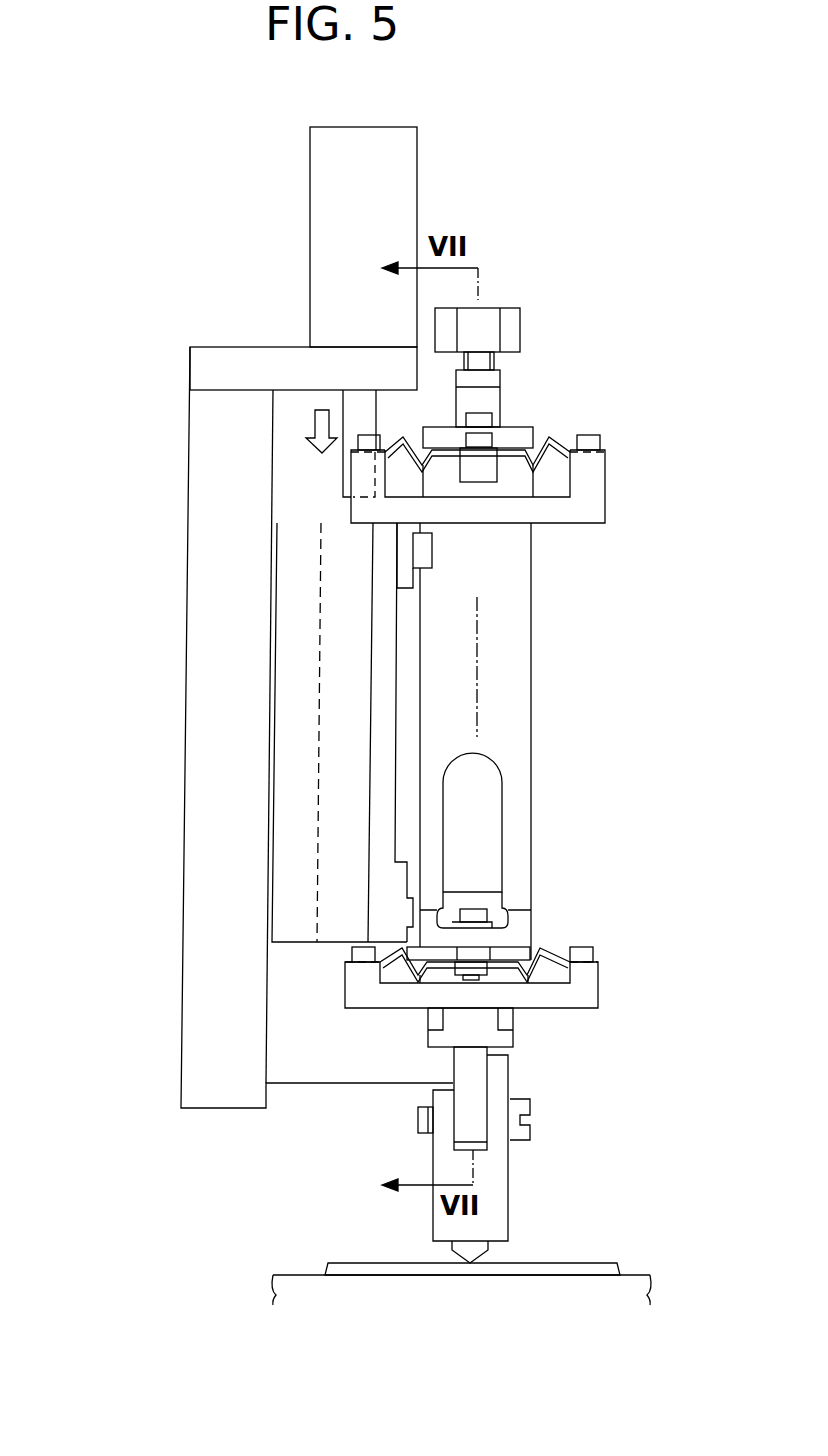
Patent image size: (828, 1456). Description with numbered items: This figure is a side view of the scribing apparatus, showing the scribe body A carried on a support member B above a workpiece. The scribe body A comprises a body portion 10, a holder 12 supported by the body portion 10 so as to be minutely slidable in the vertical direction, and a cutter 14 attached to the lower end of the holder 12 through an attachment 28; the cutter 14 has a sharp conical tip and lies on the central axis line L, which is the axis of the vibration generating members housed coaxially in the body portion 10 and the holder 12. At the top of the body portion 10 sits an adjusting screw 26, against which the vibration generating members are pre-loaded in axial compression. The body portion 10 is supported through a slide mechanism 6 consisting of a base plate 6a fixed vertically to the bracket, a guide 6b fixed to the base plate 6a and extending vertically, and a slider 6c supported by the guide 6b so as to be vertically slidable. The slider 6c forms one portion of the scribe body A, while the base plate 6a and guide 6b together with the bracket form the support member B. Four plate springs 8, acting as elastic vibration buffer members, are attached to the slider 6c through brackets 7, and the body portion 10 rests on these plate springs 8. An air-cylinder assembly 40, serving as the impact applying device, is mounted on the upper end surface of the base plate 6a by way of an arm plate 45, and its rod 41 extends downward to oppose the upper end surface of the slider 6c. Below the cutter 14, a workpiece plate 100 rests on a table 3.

The base / table 3 is at (640, 1275).
The slide mechanism 6 is at (178, 436).
The base plate 6a is at (205, 537).
The guide 6b is at (326, 748).
The slider 6c is at (352, 668).
The bracket 7 is at (567, 523).
The plate spring 8 is at (507, 447).
The body portion 10 is at (531, 730).
The holder 12 is at (513, 1038).
The cutter 14 is at (488, 1250).
The adjusting screw 26 is at (495, 363).
The attachment 28 is at (510, 1175).
The air-cylinder assembly 40 is at (388, 228).
The rod 41 is at (357, 412).
The arm plate 45 is at (262, 347).
The workpiece plate 100 is at (605, 1260).
The scribe body A is at (578, 671).
The support member B is at (193, 336).
The central axis line L is at (477, 653).